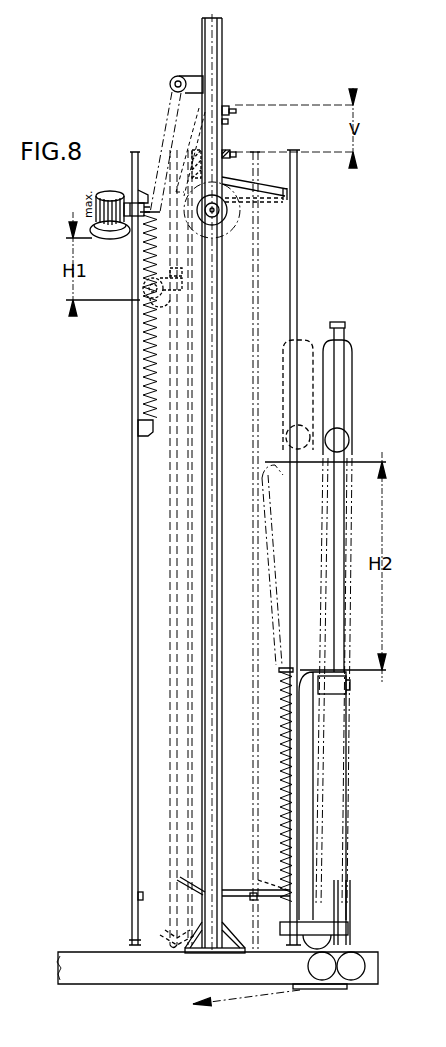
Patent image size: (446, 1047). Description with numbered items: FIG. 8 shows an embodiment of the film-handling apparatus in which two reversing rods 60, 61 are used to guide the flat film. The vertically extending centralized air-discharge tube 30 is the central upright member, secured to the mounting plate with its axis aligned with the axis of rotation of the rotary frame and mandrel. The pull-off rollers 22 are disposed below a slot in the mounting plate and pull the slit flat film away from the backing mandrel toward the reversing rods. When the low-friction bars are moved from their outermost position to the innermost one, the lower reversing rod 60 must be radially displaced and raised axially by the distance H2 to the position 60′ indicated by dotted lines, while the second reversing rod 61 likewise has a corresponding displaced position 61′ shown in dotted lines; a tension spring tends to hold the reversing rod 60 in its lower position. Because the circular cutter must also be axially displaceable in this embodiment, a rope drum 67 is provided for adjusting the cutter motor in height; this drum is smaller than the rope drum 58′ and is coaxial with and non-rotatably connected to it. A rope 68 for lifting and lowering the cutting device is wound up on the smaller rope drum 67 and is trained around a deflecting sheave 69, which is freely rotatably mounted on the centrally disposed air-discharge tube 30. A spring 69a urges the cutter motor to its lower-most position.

The pull-off rollers 22 is at (352, 958).
The air-discharge tube 30 is at (209, 90).
The rope drum 58′ is at (254, 204).
The lower reversing rod 60 is at (315, 768).
The raised position of lower reversing rod 60′ is at (272, 582).
The reversing rod 61 is at (348, 356).
The displaced position of reversing rod 61′ is at (300, 338).
The rope drum 67 is at (232, 215).
The rope 68 is at (162, 137).
The deflecting sheave 69 is at (181, 76).
The spring 69a is at (146, 364).